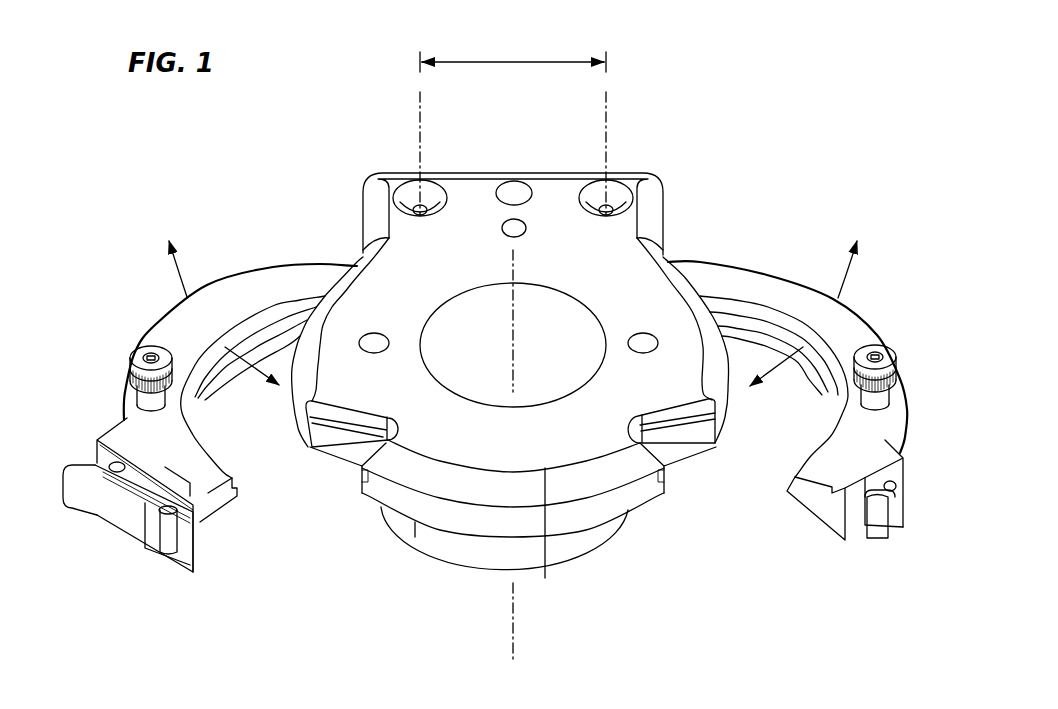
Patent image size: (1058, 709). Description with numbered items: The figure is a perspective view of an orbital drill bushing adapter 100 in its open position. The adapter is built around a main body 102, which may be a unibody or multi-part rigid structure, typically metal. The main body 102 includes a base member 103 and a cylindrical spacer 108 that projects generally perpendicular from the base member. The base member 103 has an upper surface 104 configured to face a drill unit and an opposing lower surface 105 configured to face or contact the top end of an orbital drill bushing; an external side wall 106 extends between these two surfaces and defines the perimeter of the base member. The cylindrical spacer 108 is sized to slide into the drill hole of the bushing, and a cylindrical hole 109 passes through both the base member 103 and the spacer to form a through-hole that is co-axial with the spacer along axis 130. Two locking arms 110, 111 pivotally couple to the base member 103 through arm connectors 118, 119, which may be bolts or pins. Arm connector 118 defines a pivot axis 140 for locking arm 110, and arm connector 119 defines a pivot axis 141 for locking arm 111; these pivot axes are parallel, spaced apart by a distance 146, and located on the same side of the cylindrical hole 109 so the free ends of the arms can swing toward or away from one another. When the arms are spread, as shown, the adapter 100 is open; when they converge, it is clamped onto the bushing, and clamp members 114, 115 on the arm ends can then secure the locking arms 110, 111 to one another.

The orbital drill bushing adapter 100 is at (856, 79).
The main body 102 is at (547, 508).
The base member 103 is at (405, 467).
The upper surface 104 is at (550, 233).
The lower surface 105 is at (697, 463).
The external side wall 106 is at (463, 516).
The cylindrical spacer 108 is at (594, 538).
The cylindrical hole 109 is at (547, 341).
The locking arm 110 is at (250, 270).
The locking arm 111 is at (750, 265).
The clamp member 114 is at (118, 517).
The clamp member 115 is at (899, 500).
The arm connector 118 is at (408, 202).
The arm connector 119 is at (618, 202).
The axis 130 is at (520, 606).
The pivot axis 140 is at (419, 126).
The pivot axis 141 is at (607, 125).
The distance 146 is at (535, 60).